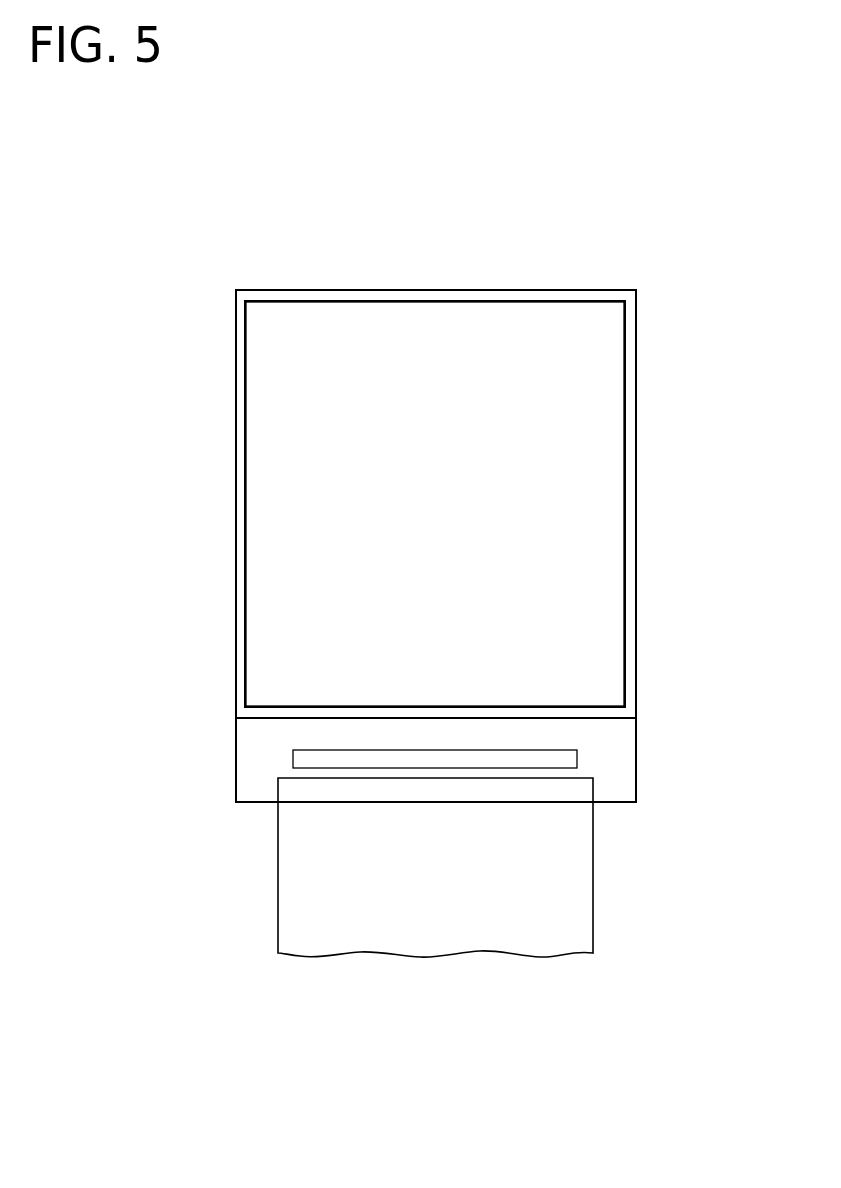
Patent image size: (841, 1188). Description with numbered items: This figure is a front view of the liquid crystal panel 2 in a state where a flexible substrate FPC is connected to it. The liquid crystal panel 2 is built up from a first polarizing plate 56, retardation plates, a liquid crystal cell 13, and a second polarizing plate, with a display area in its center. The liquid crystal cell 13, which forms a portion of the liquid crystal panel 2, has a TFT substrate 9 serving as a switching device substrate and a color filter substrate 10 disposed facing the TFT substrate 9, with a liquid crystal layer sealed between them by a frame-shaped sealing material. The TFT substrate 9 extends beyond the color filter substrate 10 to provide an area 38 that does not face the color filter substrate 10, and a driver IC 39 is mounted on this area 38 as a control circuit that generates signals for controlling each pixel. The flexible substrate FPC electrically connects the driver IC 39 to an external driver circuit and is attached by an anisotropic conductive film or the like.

The liquid crystal panel 2 is at (480, 614).
The liquid crystal cell 13 is at (640, 341).
The color filter substrate 10 is at (632, 686).
The first polarizing plate 56 is at (612, 430).
The TFT substrate 9 is at (628, 735).
The driver IC 39 is at (573, 757).
The area not facing the color filter substrate 38 is at (260, 778).
The flexible substrate FPC is at (504, 953).